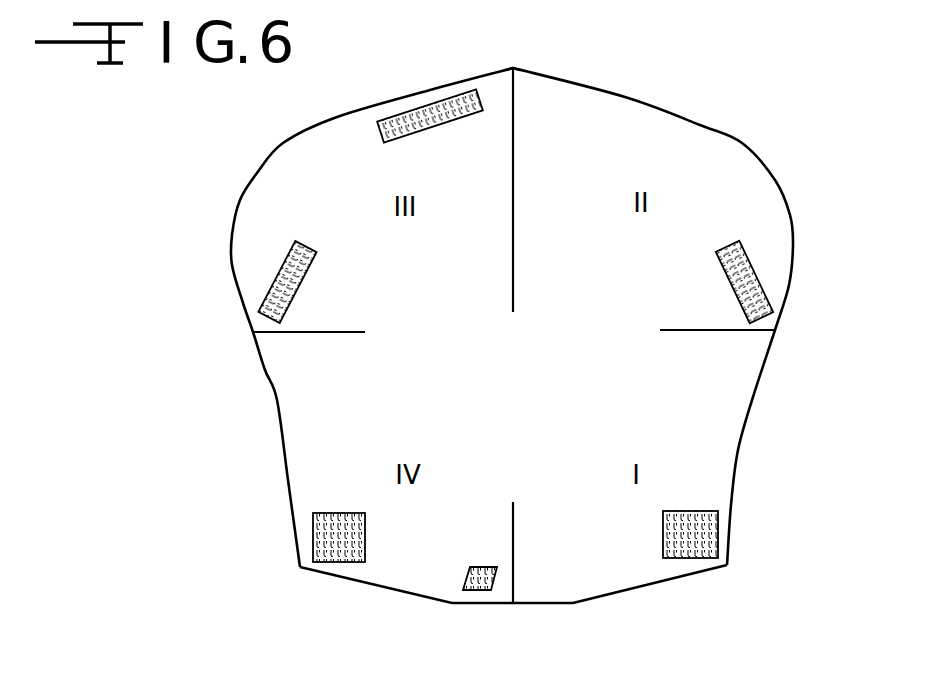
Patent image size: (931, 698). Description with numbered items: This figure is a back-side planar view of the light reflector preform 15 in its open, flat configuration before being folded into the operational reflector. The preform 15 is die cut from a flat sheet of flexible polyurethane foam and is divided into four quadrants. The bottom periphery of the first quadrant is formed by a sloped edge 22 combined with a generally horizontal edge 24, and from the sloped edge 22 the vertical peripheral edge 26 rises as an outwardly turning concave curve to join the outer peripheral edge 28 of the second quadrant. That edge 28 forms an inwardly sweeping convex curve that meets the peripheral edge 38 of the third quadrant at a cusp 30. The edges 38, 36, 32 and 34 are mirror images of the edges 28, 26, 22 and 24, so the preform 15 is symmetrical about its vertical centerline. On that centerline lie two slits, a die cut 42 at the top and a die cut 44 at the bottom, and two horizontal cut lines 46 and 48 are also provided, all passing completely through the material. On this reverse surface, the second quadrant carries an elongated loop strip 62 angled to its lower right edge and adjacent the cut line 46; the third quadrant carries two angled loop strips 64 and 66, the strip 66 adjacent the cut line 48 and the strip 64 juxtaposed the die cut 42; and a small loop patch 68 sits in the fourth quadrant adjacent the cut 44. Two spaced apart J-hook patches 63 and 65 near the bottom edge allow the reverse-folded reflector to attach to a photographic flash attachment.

The preform 15 is at (746, 139).
The slopped edge 22 is at (653, 587).
The generally horizontal edge 24 is at (543, 603).
The vertical peripheral edge 26 is at (735, 480).
The outer peripheral edge 28 is at (625, 97).
The cusp 30 is at (520, 67).
The slopped edge 32 is at (390, 590).
The peripheral edge 34 is at (497, 603).
The peripheral edge 36 is at (282, 432).
The peripheral edge 38 is at (337, 117).
The die cut 42 is at (518, 238).
The die cut 44 is at (517, 575).
The horizontal cut line 46 is at (700, 330).
The horizontal cut line 48 is at (342, 332).
The loop strip 62 is at (753, 273).
The J-hook patch 63 is at (313, 532).
The loop strip 64 is at (440, 107).
The J-hook patch 65 is at (717, 530).
The loop strip 66 is at (270, 272).
The loop patch 68 is at (483, 567).